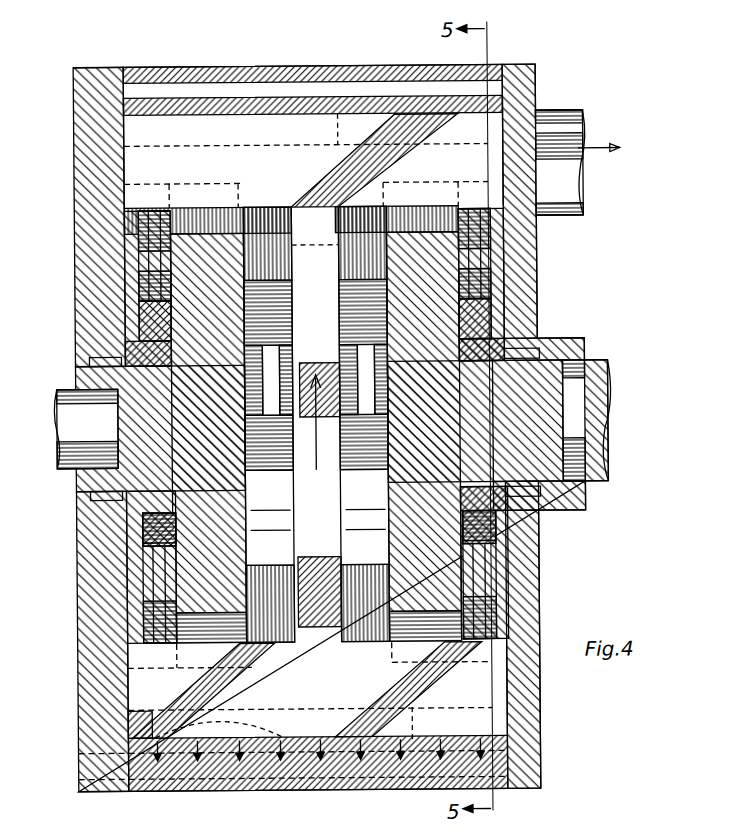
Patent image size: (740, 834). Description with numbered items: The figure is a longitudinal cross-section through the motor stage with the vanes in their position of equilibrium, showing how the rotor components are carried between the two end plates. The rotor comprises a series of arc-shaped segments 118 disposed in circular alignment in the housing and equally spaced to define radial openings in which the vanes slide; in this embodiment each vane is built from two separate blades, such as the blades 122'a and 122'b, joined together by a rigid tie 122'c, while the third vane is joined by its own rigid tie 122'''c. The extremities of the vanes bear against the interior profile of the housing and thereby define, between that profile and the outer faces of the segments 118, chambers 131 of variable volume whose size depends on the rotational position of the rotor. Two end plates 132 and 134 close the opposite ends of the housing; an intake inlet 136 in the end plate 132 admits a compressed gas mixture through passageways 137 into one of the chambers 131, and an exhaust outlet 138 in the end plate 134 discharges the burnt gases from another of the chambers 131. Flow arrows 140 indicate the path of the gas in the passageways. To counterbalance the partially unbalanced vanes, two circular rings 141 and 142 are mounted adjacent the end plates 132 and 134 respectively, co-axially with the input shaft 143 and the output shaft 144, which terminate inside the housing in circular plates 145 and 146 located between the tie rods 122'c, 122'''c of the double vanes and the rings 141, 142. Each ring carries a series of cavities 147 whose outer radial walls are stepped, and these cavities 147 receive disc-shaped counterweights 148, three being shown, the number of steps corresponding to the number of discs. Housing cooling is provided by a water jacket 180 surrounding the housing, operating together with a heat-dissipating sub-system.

The arc-shaped segments 118 is at (280, 207).
The blade 122'a is at (307, 734).
The blade 122'b is at (327, 120).
The rigid tie 122'c is at (316, 424).
The rigid tie 122'''c is at (556, 510).
The chambers 131 is at (345, 96).
The end plate 132 is at (80, 148).
The end plate 134 is at (527, 578).
The intake inlet 136 is at (78, 772).
The passageways 137 is at (190, 790).
The exhaust outlet 138 is at (567, 125).
The flow arrows 140 is at (318, 735).
The circular ring 141 is at (150, 290).
The circular ring 142 is at (492, 348).
The input shaft 143 is at (62, 393).
The output shaft 144 is at (598, 380).
The circular plate 145 is at (170, 340).
The circular plate 146 is at (425, 300).
The cavities 147 is at (160, 318).
The disc-shaped counterweights 148 is at (148, 240).
The water jacket 180 is at (318, 92).